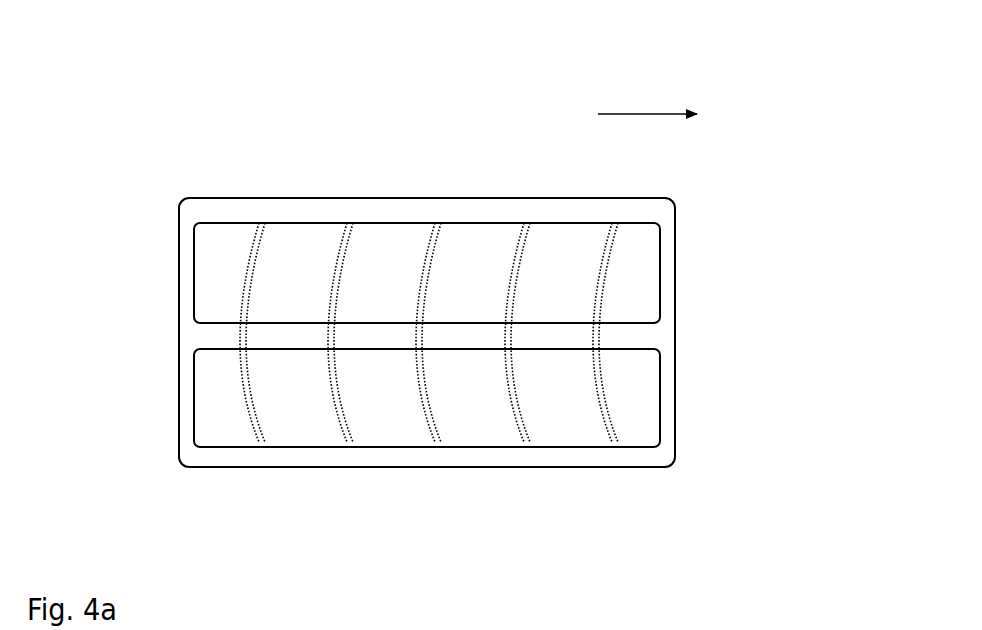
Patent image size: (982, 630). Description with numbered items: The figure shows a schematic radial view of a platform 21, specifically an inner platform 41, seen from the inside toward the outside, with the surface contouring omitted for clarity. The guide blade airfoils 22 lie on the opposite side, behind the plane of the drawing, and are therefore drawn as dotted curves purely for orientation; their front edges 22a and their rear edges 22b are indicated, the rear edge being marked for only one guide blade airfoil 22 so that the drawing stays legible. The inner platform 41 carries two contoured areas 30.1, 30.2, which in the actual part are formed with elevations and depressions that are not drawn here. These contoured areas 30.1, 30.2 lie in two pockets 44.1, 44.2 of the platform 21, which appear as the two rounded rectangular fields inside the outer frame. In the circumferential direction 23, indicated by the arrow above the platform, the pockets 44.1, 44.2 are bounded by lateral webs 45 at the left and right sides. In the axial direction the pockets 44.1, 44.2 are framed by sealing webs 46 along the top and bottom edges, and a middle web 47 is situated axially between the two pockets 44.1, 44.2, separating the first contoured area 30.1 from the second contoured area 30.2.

The platform 21 is at (415, 256).
The inner platform 41 is at (415, 256).
The guide blade airfoils 22 is at (218, 404).
The front edges 22a is at (265, 223).
The rear edges 22b is at (272, 442).
The circumferential direction 23 is at (635, 113).
The lateral webs 45 is at (193, 118).
The sealing webs 46 is at (482, 212).
The middle web 47 is at (437, 333).
The first contoured area 30.1 is at (523, 273).
The first pocket 44.1 is at (635, 293).
The second contoured area 30.2 is at (522, 398).
The second pocket 44.2 is at (642, 403).